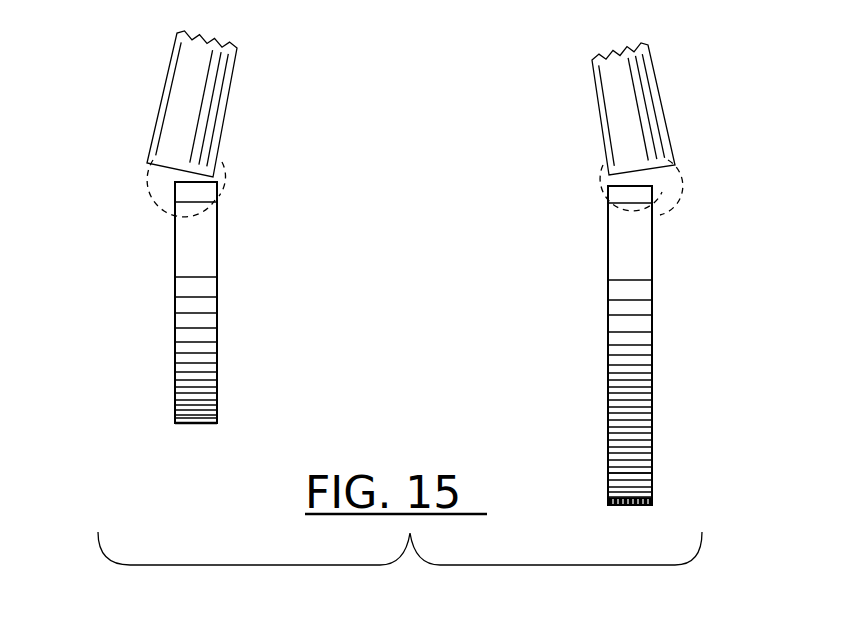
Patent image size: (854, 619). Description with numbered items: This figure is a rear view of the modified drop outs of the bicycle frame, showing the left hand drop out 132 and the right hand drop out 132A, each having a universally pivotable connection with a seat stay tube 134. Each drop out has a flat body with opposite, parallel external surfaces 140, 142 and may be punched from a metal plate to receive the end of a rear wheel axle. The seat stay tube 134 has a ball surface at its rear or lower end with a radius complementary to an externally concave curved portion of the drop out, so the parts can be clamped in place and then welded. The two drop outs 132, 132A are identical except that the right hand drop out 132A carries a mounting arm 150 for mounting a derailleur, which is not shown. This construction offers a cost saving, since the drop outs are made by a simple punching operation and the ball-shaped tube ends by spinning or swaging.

The seat stay tube 134 is at (192, 82).
The external surface 140 is at (166, 268).
The external surface 142 is at (227, 315).
The drop out 132 is at (198, 440).
The mounting arm 150 is at (652, 473).
The drop out 132A is at (626, 515).